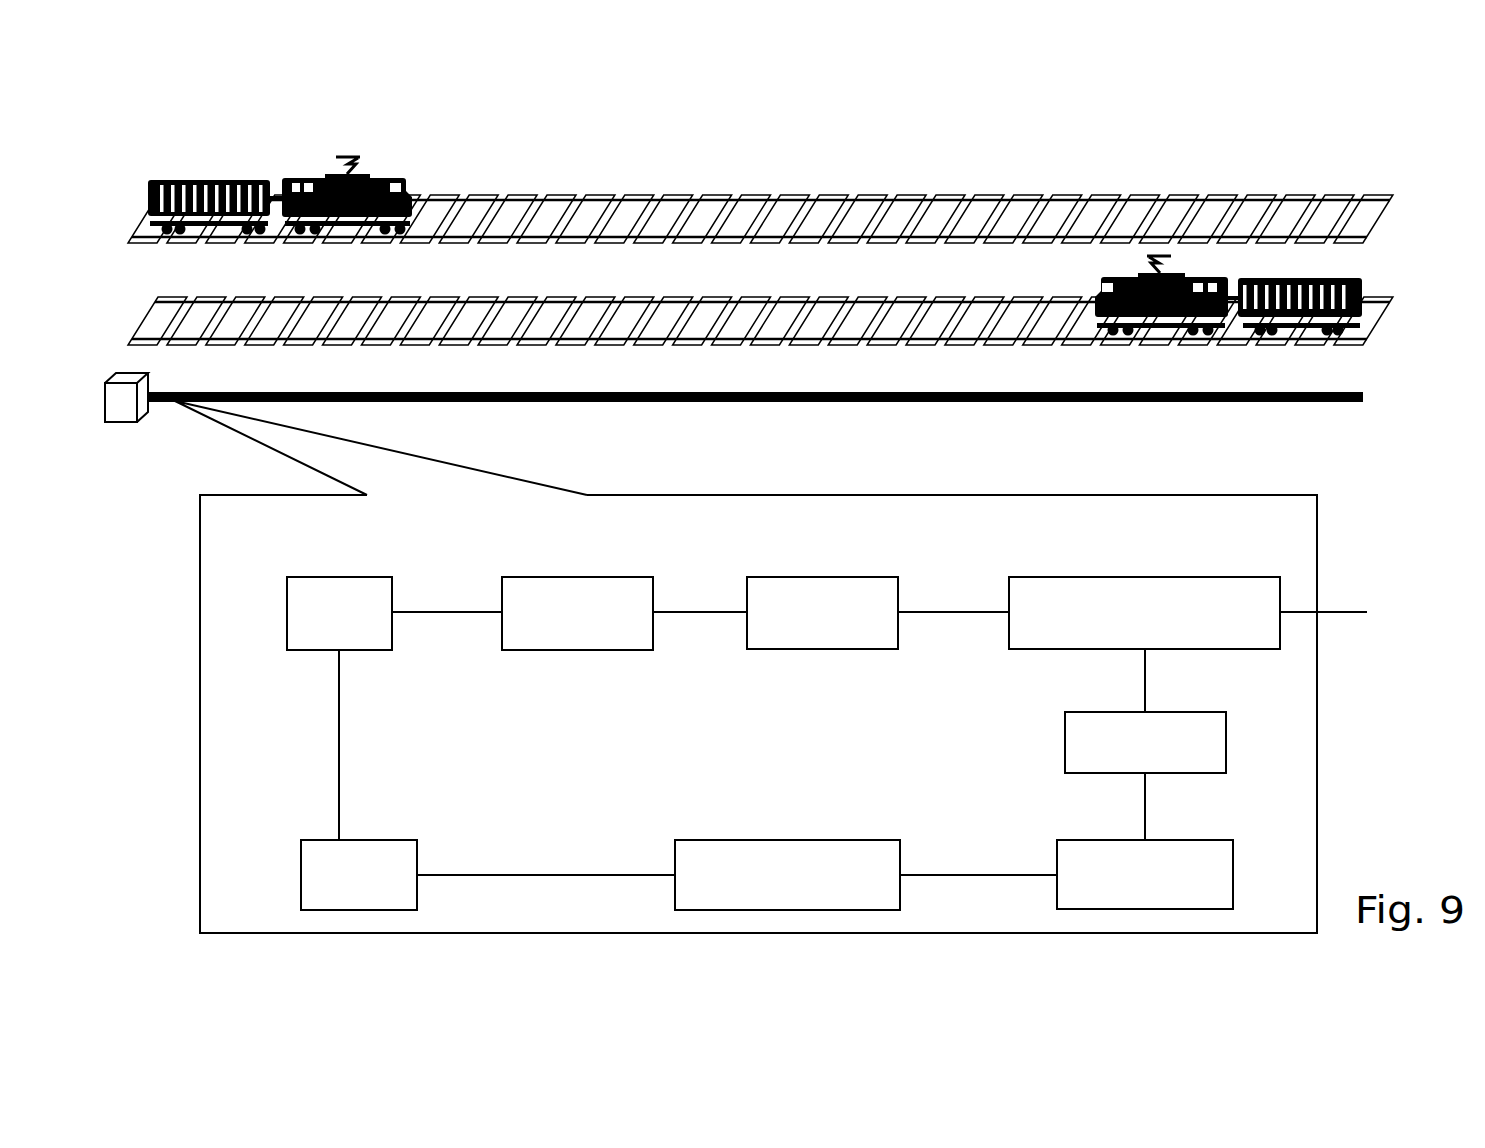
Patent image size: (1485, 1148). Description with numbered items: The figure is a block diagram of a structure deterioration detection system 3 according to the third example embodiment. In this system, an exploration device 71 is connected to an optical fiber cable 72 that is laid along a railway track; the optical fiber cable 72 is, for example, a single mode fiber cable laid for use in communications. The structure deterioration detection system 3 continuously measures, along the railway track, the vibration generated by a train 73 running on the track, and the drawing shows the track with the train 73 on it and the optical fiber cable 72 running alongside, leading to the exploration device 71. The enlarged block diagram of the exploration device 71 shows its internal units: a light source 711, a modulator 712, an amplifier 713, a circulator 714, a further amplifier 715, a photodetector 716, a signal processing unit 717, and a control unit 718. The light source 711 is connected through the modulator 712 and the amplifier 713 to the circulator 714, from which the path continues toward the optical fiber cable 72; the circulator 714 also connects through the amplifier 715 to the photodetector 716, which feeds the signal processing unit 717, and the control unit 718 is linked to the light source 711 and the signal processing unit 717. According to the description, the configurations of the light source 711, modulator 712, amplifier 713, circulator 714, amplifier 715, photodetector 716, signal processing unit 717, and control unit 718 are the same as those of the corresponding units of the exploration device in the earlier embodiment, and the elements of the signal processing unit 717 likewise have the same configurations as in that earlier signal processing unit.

The structure deterioration detection system 3 is at (859, 88).
The exploration device 71 is at (118, 424).
The optical fiber cable 72 is at (1177, 403).
The train 73 is at (384, 178).
The light source 711 is at (346, 577).
The modulator 712 is at (600, 577).
The amplifier 713 is at (855, 577).
The circulator 714 is at (1190, 577).
The amplifier 715 is at (1198, 712).
The photodetector 716 is at (1190, 840).
The signal processing unit 717 is at (837, 840).
The control unit 718 is at (383, 840).